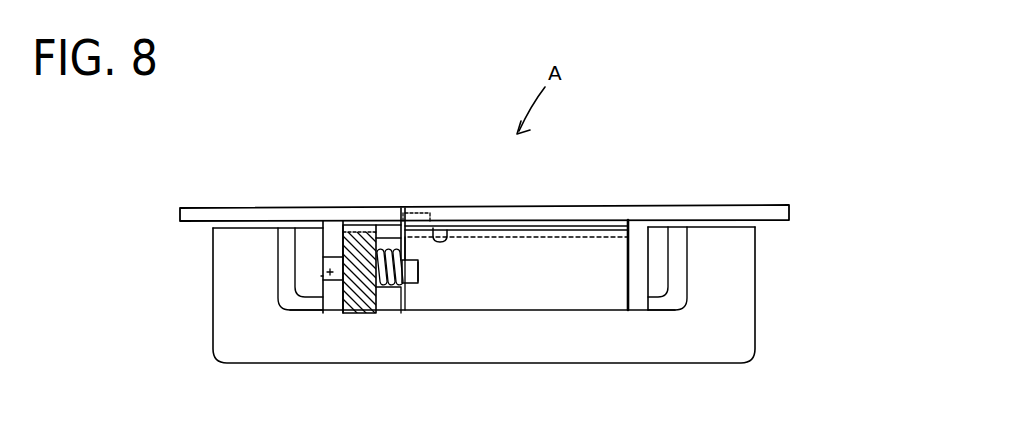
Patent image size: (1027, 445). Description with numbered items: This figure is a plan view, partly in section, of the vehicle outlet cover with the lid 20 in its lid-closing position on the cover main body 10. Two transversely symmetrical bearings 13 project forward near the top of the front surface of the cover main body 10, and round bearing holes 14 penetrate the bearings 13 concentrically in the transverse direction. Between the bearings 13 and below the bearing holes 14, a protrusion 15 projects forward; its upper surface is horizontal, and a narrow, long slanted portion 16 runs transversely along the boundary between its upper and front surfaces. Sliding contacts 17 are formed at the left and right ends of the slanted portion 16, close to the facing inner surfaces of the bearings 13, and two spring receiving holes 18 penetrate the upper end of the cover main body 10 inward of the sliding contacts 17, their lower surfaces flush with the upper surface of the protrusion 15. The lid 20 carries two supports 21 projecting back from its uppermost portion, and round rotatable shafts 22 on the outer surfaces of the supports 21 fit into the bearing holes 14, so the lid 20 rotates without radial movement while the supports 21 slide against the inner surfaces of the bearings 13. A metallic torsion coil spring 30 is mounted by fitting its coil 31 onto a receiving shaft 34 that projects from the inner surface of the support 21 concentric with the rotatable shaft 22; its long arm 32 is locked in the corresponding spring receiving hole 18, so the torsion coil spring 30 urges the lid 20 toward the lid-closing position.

The cover main body 10 is at (223, 217).
The bearings 13 is at (332, 297).
The bearing holes 14 is at (318, 278).
The protrusion 15 is at (440, 233).
The slanted portion 16 is at (433, 230).
The sliding contacts 17 is at (361, 230).
The spring receiving holes 18 is at (421, 212).
The lid 20 is at (508, 292).
The supports 21 is at (360, 283).
The rotatable shafts 22 is at (318, 276).
The torsion coil spring 30 is at (392, 288).
The coil 31 is at (385, 290).
The long arm 32 is at (400, 228).
The receiving shaft 34 is at (418, 265).